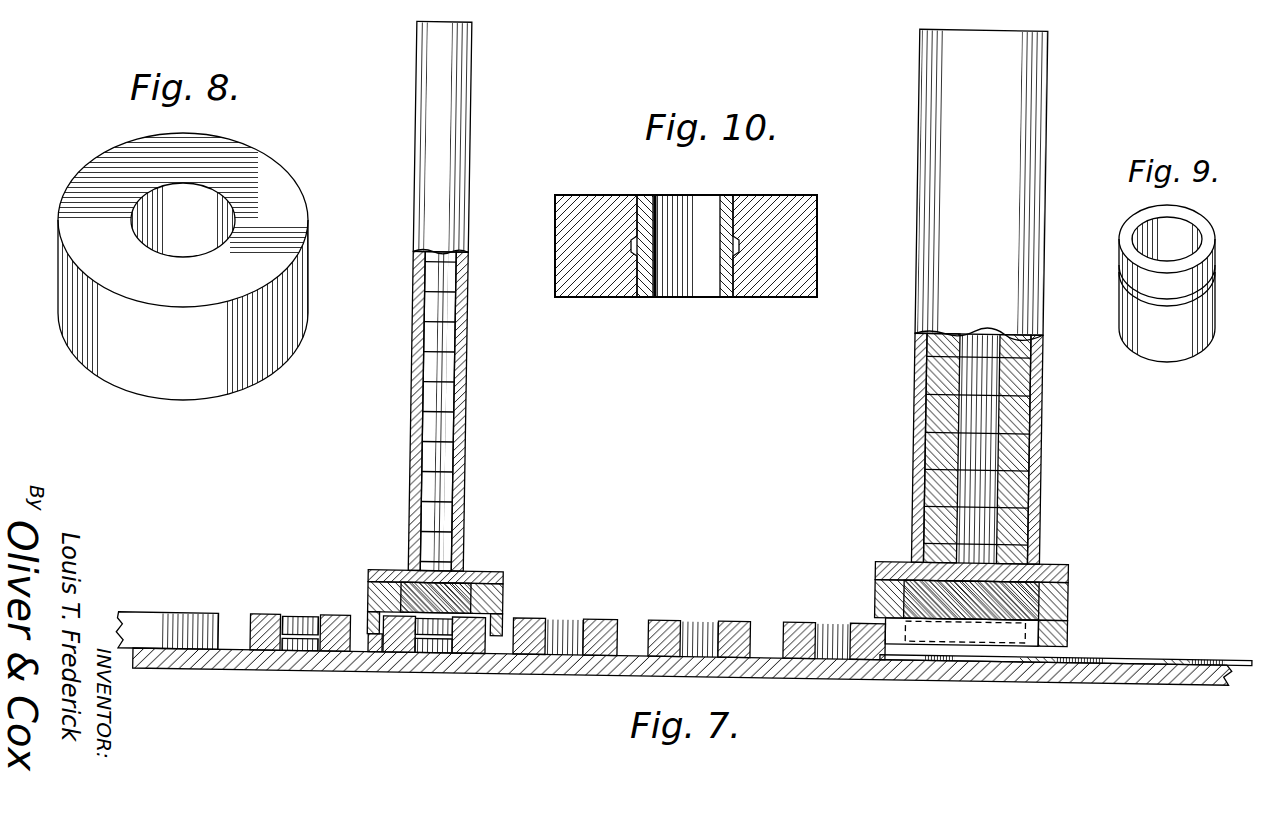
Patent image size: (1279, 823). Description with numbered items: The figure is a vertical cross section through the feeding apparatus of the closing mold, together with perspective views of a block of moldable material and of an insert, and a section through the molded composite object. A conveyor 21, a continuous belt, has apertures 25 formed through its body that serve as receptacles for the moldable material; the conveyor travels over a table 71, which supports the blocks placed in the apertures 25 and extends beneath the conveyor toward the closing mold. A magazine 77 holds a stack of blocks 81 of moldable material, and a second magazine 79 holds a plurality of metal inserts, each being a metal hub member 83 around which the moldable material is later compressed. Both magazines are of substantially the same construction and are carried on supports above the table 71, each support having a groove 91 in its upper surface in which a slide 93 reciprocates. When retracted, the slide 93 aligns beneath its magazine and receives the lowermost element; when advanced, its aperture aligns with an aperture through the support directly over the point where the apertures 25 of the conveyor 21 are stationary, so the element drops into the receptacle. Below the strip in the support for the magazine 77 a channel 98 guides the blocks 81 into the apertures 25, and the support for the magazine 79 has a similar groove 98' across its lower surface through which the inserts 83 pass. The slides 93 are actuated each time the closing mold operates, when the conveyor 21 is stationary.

In FIG. 7, the conveyor 21 is at (1178, 643).
In FIG. 7, the apertures 25 is at (1008, 646).
In FIG. 7, the table 71 is at (437, 652).
In FIG. 7, the magazine 77 is at (1030, 152).
In FIG. 7, the second magazine 79 is at (450, 186).
In FIG. 8, the blocks of moldable material 81 is at (290, 210).
In FIG. 10, the blocks of moldable material 81 is at (615, 197).
In FIG. 7, the blocks of moldable material 81 is at (208, 618).
In FIG. 9, the metal hub member 83 is at (1206, 240).
In FIG. 10, the metal hub member 83 is at (665, 197).
In FIG. 7, the metal hub member 83 is at (300, 610).
In FIG. 7, the groove 91 is at (492, 592).
In FIG. 7, the slide 93 is at (398, 580).
In FIG. 7, the channel 98 is at (960, 659).
In FIG. 7, the groove 98' is at (404, 647).